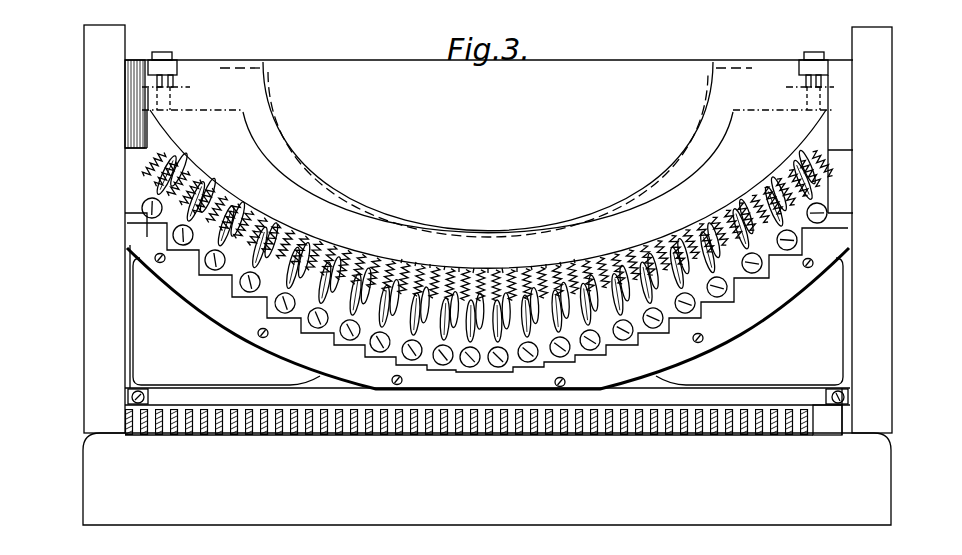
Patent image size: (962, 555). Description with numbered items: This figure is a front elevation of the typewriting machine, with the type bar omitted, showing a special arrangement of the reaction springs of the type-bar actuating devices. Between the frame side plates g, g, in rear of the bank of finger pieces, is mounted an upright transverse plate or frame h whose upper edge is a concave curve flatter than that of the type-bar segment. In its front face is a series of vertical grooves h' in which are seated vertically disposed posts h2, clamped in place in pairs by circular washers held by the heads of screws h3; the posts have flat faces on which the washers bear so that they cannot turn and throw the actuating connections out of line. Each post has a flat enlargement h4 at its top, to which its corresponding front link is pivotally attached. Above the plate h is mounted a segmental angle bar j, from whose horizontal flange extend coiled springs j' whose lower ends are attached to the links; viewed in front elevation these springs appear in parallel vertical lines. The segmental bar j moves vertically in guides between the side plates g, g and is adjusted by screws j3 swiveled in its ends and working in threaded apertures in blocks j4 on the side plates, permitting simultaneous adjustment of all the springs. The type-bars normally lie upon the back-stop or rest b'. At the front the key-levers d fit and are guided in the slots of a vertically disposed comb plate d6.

The frame side plates g is at (84, 150).
The screws j3 is at (163, 53).
The blocks j4 is at (178, 72).
The back-stop or rest b' is at (486, 152).
The segmental angle bar j is at (488, 189).
The coiled springs j' is at (488, 278).
The flat enlargement h4 is at (826, 176).
The posts h2 is at (828, 221).
The screws h3 is at (322, 383).
The vertical grooves h' is at (484, 320).
The upright transverse plate or frame h is at (488, 323).
The vertically disposed comb plate d6 is at (772, 399).
The key-levers d is at (486, 437).